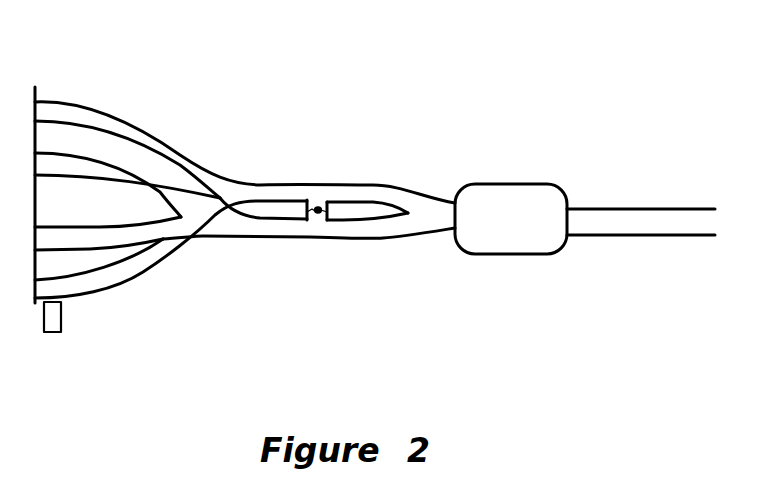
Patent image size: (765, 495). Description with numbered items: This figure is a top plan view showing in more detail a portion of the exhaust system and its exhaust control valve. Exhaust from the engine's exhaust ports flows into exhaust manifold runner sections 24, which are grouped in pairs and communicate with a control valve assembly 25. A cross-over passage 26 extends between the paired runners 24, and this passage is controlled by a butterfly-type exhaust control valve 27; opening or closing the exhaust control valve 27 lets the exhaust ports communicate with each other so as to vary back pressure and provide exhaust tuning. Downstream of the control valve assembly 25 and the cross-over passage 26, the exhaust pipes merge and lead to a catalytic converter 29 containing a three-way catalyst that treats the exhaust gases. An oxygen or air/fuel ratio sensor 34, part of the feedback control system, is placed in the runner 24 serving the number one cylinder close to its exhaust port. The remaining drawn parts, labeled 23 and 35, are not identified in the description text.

The fiber optic bundle 23 is at (443, 208).
The exhaust manifold runner sections 24 is at (117, 267).
The control valve assembly 25 is at (323, 207).
The cross-over passage 26 is at (346, 220).
The exhaust control valve 27 is at (310, 219).
The catalytic converter 29 is at (543, 184).
The oxygen or air/fuel ratio sensor 34 is at (52, 333).
The output cable 35 is at (672, 209).